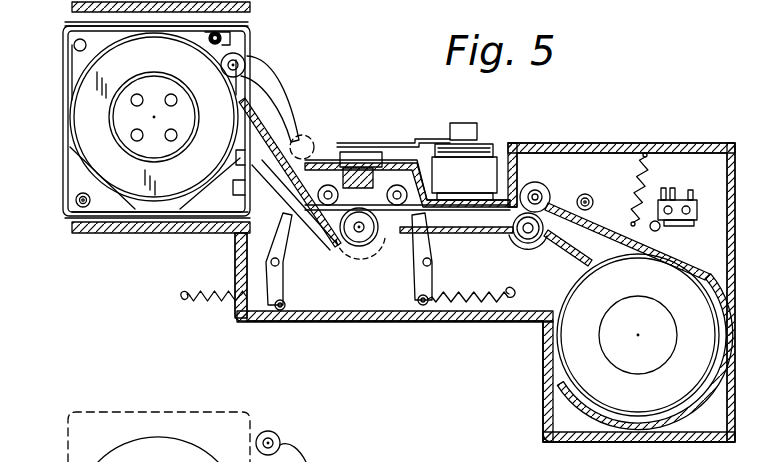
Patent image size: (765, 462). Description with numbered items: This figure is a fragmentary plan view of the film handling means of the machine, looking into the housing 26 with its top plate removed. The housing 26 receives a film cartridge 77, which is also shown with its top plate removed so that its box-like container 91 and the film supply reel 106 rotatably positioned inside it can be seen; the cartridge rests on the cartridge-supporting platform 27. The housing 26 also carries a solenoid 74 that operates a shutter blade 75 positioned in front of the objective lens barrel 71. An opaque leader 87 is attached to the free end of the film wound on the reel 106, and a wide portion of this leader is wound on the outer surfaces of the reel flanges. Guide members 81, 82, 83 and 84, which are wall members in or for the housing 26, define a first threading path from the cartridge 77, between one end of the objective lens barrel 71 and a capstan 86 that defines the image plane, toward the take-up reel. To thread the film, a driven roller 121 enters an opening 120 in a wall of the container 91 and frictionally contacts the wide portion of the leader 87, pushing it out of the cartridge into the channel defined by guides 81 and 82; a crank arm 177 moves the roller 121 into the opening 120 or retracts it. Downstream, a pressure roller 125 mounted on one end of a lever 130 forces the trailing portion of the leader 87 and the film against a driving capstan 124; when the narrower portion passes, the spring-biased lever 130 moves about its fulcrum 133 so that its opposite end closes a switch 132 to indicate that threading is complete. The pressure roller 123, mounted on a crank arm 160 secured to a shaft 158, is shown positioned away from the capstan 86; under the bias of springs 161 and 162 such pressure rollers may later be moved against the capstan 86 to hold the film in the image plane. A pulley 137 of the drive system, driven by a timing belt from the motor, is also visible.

The housing 26 is at (636, 143).
The cartridge-supporting platform 27 is at (157, 218).
The objective lens barrel 71 is at (343, 152).
The solenoid 74 is at (468, 180).
The shutter blade 75 is at (372, 143).
The film cartridge 77 is at (62, 177).
The guide member 81 is at (278, 131).
The guide member 82 is at (285, 197).
The guide member 83 is at (326, 240).
The guide member 84 is at (600, 218).
The capstan 86 is at (365, 251).
The leader 87 is at (70, 108).
The box-like container 91 is at (107, 212).
The film supply reel 106 is at (166, 63).
The opening 120 is at (247, 47).
The driven roller 121 is at (250, 66).
The pressure roller 123 is at (338, 195).
The capstan 124 is at (513, 250).
The pressure roller 125 is at (530, 184).
The lever 130 is at (578, 196).
The switch 132 is at (680, 226).
The fulcrum 133 is at (590, 193).
The pulley 137 is at (424, 266).
The shaft 158 is at (285, 262).
The crank arm 160 is at (285, 289).
The spring 161 is at (232, 305).
The spring 162 is at (437, 292).
The crank arm 177 is at (275, 103).